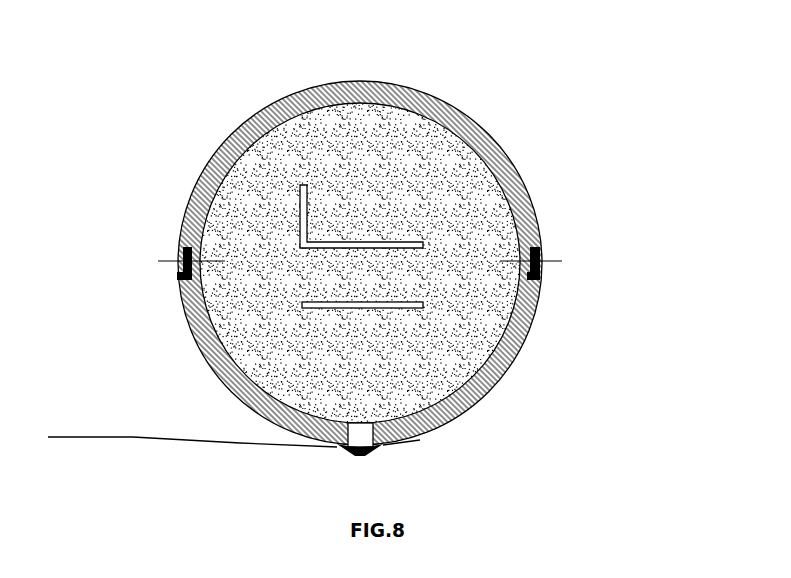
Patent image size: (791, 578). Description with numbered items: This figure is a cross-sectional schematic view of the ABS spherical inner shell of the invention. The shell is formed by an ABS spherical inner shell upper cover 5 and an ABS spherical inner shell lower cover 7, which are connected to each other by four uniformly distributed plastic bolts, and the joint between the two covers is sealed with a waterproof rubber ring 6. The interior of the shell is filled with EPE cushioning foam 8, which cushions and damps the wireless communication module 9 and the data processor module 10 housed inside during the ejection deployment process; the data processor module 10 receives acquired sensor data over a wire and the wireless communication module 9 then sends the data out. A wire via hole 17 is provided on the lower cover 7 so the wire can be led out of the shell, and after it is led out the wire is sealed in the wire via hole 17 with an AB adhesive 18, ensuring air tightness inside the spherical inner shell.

The ABS spherical inner shell upper cover 5 is at (498, 162).
The waterproof rubber ring 6 is at (542, 250).
The ABS spherical inner shell lower cover 7 is at (528, 295).
The EPE cushioning foam 8 is at (263, 302).
The wireless communication module 9 is at (322, 242).
The data processor module 10 is at (325, 307).
The wire via hole 17 is at (359, 433).
The AB adhesive 18 is at (234, 418).